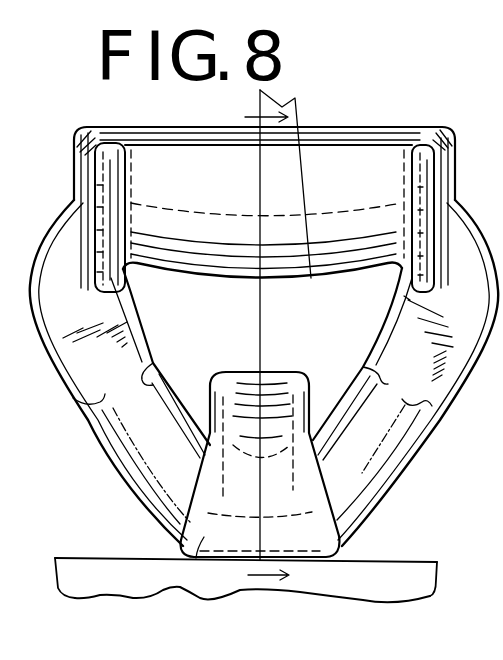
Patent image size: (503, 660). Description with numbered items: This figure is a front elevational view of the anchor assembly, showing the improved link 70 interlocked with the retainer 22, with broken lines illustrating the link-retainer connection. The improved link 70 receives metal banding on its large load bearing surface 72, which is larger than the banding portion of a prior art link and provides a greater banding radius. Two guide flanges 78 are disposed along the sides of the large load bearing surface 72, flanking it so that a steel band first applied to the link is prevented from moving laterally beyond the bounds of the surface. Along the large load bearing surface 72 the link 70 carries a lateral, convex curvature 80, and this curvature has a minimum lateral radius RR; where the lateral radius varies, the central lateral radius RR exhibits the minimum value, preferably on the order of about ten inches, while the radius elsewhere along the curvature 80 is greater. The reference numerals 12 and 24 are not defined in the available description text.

The section line / viewing direction 12 is at (251, 343).
The retainer 22 is at (203, 598).
The ground 24 is at (103, 586).
The improved link 70 is at (114, 366).
The large load bearing surface 72 is at (355, 161).
The guide flanges 78 is at (97, 150).
The lateral convex curvature 80 is at (191, 271).
The minimum lateral radius of curvature RR is at (296, 110).